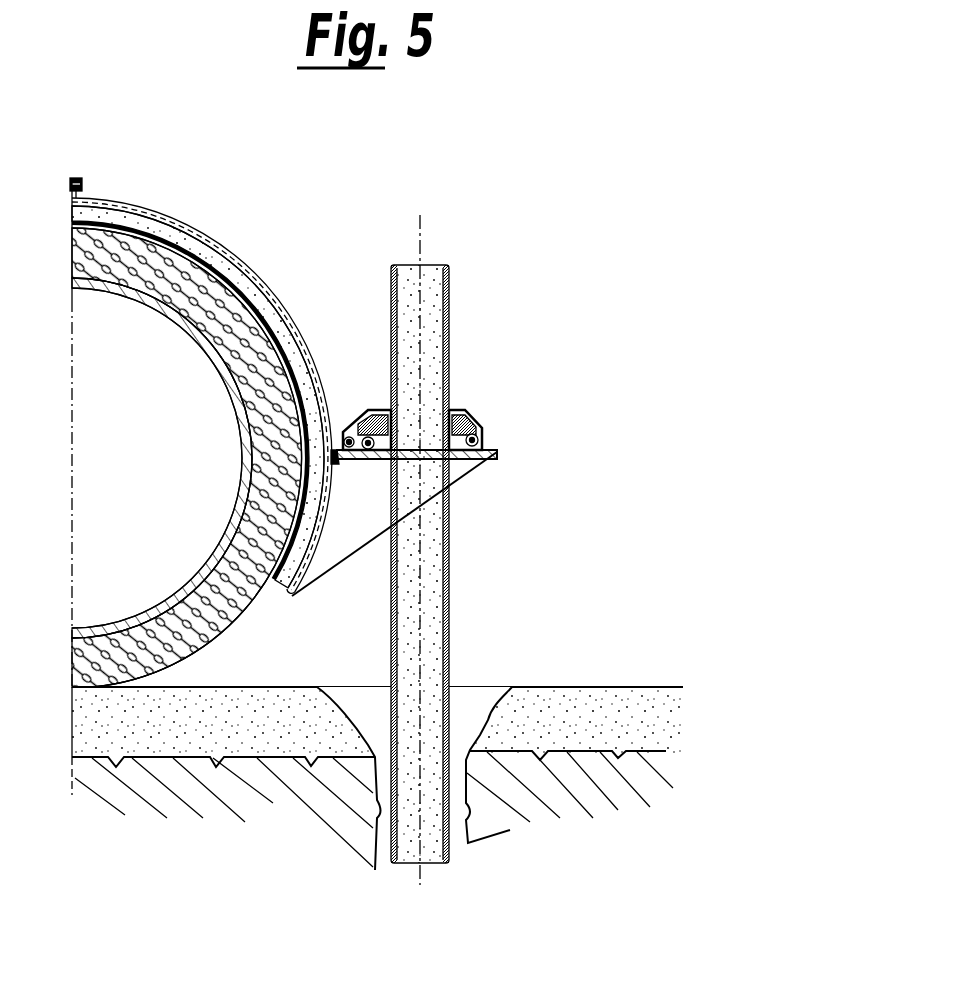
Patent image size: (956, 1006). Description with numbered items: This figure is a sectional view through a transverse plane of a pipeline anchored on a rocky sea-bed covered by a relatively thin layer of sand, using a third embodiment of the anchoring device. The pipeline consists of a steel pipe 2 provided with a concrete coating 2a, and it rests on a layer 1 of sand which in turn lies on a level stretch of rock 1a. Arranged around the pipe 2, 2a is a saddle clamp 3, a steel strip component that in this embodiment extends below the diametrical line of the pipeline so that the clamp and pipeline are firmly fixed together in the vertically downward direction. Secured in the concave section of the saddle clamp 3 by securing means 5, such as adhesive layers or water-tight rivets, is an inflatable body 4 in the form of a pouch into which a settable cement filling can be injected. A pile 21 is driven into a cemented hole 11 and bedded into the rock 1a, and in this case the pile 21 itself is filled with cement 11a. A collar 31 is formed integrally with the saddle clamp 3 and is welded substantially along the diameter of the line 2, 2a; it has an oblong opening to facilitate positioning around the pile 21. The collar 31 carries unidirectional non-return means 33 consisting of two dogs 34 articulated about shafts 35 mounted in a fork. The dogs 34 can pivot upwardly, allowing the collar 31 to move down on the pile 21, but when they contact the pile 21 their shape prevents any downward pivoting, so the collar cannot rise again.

The layer of sand 1 is at (249, 692).
The rock 1a is at (374, 809).
The pipe 2 is at (205, 540).
The concrete coating 2a is at (212, 655).
The saddle clamp 3 is at (258, 282).
The inflatable body 4 is at (218, 250).
The securing means 5 is at (284, 318).
The hole 11 is at (513, 687).
The cement 11a is at (440, 590).
The pile 21 is at (450, 550).
The collar 31 is at (500, 455).
The unidirectional non-return means 33 is at (493, 423).
The dogs 34 is at (362, 415).
The shafts 35 is at (478, 452).